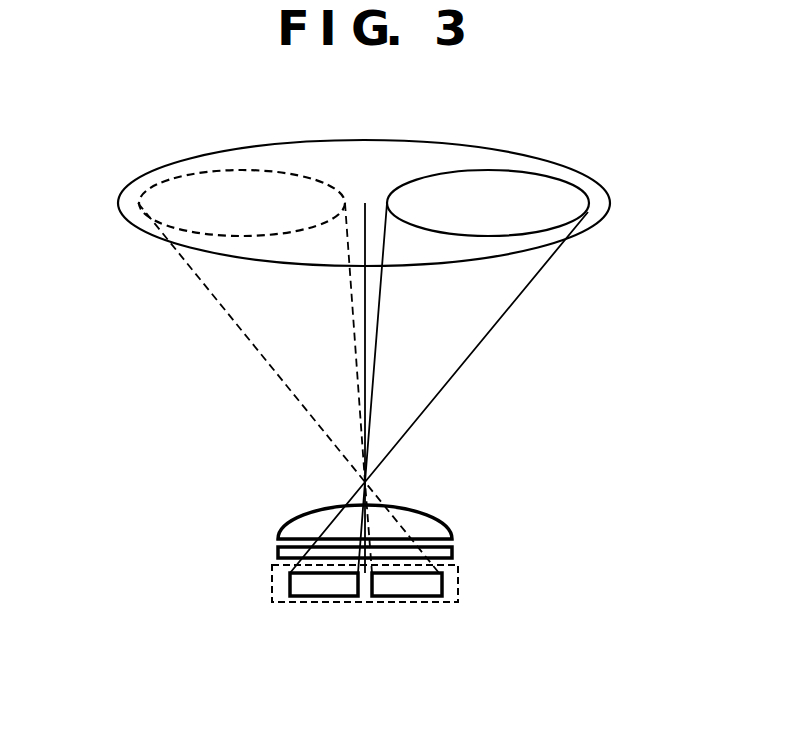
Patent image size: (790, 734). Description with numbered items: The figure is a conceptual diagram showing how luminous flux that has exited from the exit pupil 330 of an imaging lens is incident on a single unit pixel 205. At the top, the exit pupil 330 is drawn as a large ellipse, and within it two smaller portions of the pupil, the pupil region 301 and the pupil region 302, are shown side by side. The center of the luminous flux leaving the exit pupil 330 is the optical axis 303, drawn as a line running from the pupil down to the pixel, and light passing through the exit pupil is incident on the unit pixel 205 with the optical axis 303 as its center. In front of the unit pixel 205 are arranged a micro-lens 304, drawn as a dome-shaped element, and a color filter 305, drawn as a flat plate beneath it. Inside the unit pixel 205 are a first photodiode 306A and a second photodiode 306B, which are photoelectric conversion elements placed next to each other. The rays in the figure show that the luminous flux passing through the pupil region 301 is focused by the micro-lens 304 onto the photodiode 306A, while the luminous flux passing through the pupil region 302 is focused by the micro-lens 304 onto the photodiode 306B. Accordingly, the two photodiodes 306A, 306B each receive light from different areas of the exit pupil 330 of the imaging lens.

The exit pupil 330 is at (463, 147).
The pupil region 301 is at (585, 186).
The pupil region 302 is at (144, 198).
The optical axis 303 is at (362, 207).
The micro-lens 304 is at (452, 519).
The color filter 305 is at (452, 550).
The unit pixel 205 is at (459, 588).
The first photodiode 306A is at (320, 597).
The second photodiode 306B is at (404, 597).